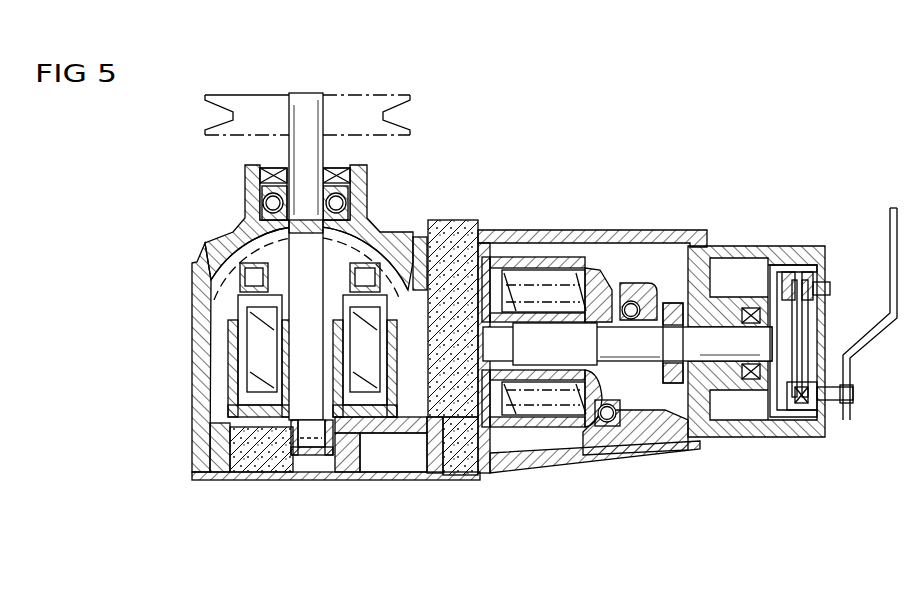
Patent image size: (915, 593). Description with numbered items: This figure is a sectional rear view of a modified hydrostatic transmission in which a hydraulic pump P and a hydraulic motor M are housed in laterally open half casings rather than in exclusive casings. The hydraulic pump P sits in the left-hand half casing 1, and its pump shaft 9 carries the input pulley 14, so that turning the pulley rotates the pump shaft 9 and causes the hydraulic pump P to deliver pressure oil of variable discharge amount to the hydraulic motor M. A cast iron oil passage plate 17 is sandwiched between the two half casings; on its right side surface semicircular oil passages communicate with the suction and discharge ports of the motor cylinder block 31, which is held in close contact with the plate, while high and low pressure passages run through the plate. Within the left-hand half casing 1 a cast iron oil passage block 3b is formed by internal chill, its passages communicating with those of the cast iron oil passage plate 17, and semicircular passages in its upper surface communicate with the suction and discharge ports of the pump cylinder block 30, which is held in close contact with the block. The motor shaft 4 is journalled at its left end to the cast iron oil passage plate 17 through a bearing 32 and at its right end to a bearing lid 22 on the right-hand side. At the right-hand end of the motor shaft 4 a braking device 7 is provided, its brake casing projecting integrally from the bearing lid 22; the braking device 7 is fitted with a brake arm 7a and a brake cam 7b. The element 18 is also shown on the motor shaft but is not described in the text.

The left-hand half casing 1 is at (195, 388).
The cylinder block 30 is at (230, 403).
The cast iron oil passage block 3b is at (322, 472).
The pump shaft 9 is at (298, 93).
The input pulley 14 is at (405, 96).
The bearing 32 is at (420, 237).
The cast iron oil passage plate 17 is at (451, 220).
The cylinder block 31 is at (512, 462).
The bearing lid 22 is at (752, 440).
The hydraulic motor M is at (626, 275).
The hydraulic pump P is at (180, 352).
The motor shaft 4 is at (628, 363).
The collar 18 is at (668, 383).
The braking device 7 is at (793, 265).
The brake arm 7a is at (888, 244).
The brake cam 7b is at (856, 395).